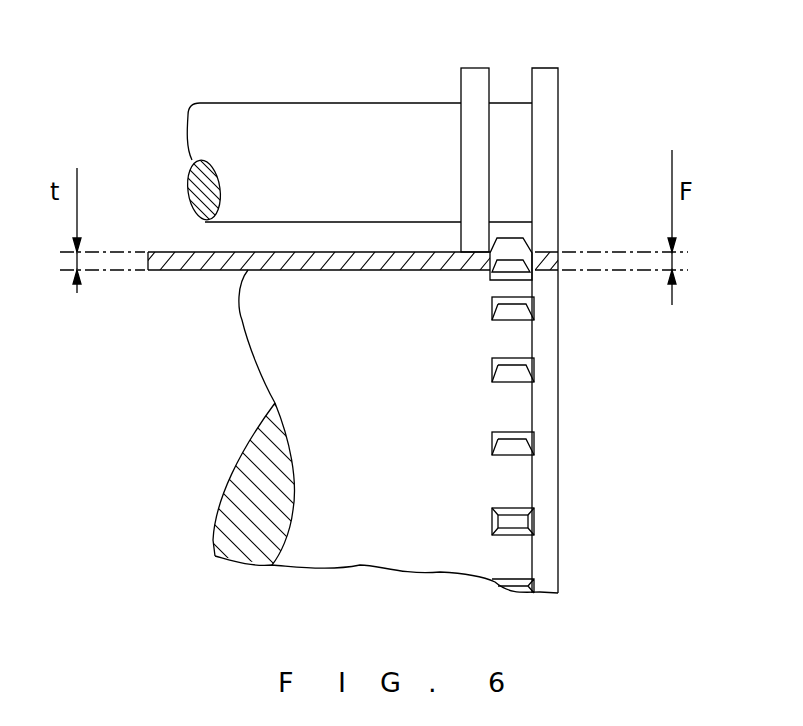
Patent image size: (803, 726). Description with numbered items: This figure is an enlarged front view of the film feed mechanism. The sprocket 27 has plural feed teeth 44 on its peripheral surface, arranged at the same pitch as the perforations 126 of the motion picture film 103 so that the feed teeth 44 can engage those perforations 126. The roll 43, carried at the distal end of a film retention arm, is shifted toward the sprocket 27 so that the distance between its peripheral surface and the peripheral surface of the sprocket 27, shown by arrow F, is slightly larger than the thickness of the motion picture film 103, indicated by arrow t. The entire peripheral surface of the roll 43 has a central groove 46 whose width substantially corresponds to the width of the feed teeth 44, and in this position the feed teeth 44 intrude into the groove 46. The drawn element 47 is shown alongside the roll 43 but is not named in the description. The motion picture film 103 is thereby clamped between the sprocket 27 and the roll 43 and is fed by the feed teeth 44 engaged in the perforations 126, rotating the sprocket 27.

The shaft 47 is at (406, 112).
The central groove 46 is at (531, 82).
The roll 43 is at (552, 98).
The sprocket 27 is at (549, 548).
The perforations 126 is at (522, 248).
The feed teeth 44 is at (520, 314).
The motion picture film 103 is at (188, 272).